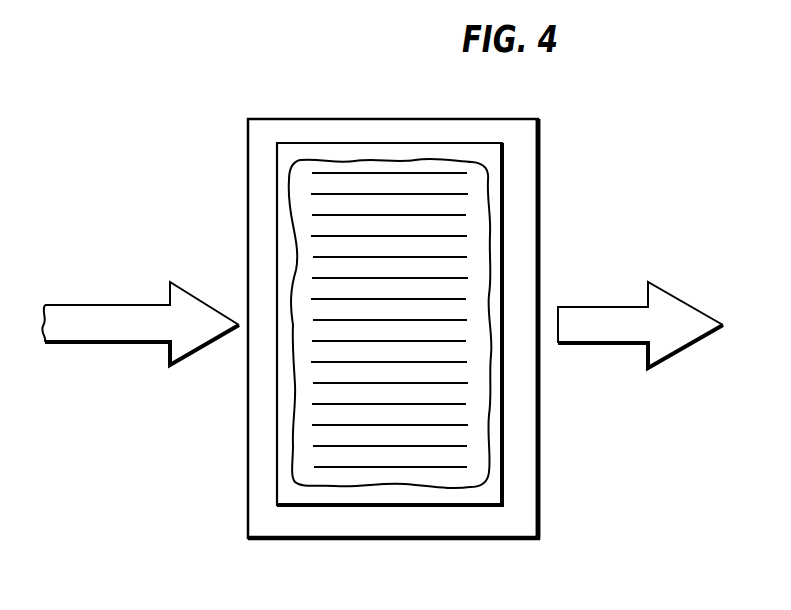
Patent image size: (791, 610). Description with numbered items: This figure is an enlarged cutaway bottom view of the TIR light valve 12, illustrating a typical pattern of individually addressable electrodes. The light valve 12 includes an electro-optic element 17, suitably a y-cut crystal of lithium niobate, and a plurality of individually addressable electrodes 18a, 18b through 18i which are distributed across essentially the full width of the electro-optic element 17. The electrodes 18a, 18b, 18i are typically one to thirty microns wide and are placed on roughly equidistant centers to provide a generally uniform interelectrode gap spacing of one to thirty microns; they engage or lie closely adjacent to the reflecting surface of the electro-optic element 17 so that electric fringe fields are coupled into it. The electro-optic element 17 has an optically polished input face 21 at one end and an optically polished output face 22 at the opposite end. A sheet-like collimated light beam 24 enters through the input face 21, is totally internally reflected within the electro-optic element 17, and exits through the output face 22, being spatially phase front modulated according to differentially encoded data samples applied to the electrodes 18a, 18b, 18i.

The light valve 12 is at (570, 205).
The electro-optic element 17 is at (267, 407).
The individually addressable electrode 18a is at (335, 173).
The individually addressable electrode 18b is at (425, 194).
The individually addressable electrode 18i is at (367, 467).
The input face 21 is at (248, 192).
The output face 22 is at (540, 410).
The light beam 24 is at (123, 318).